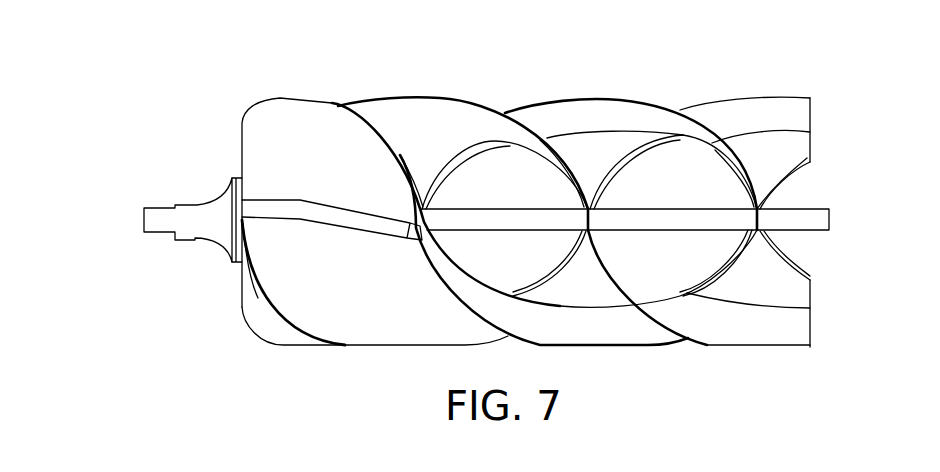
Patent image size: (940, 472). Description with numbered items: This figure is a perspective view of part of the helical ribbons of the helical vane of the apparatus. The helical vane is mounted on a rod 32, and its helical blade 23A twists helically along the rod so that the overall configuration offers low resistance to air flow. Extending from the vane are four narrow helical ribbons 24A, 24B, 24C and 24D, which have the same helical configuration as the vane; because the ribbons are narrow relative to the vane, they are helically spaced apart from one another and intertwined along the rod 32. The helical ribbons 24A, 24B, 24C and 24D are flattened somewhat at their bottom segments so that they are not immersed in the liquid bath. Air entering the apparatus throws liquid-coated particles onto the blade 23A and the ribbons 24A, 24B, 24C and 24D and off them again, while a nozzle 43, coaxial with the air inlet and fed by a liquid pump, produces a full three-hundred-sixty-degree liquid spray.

The nozzle 43 is at (220, 195).
The rod 32 is at (813, 207).
The helical blade 23A is at (293, 117).
The helical ribbon 24A is at (543, 150).
The helical ribbon 24B is at (627, 117).
The helical ribbon 24C is at (730, 105).
The helical ribbon 24D is at (813, 148).